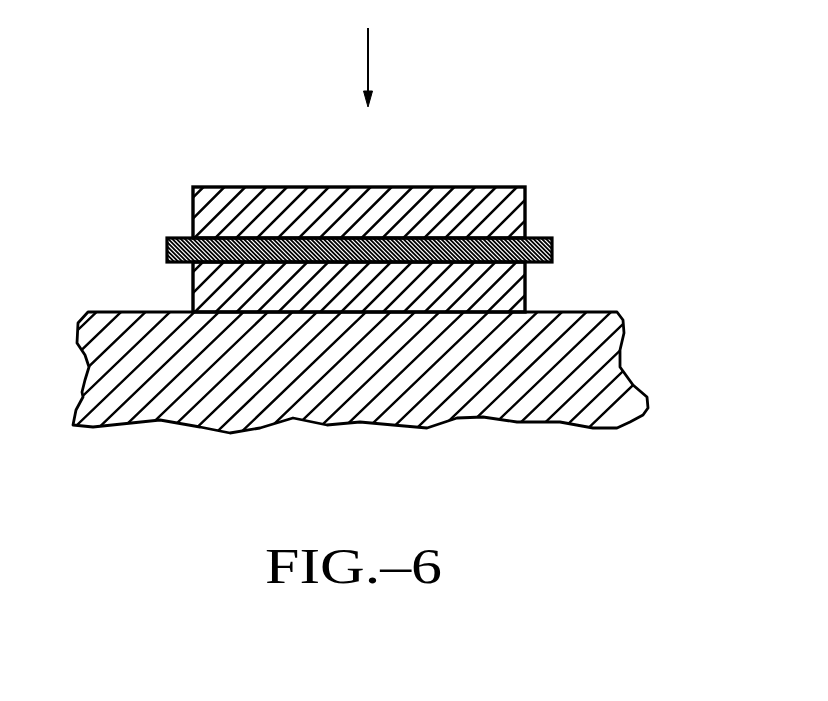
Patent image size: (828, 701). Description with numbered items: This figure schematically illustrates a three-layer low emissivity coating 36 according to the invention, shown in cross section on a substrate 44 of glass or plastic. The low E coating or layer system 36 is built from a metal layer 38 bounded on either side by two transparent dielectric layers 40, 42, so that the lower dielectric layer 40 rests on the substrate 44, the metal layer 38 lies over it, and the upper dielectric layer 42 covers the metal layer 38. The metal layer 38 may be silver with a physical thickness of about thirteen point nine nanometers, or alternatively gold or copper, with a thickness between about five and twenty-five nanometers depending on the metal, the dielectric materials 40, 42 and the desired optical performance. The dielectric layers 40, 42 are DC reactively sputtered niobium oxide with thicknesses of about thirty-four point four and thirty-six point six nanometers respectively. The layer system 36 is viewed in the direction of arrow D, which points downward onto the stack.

The low emissivity coating 36 is at (487, 137).
The metal layer 38 is at (552, 251).
The transparent dielectric layer 40 is at (527, 293).
The transparent dielectric layer 42 is at (520, 220).
The substrate 44 is at (472, 395).
The arrow D is at (386, 67).